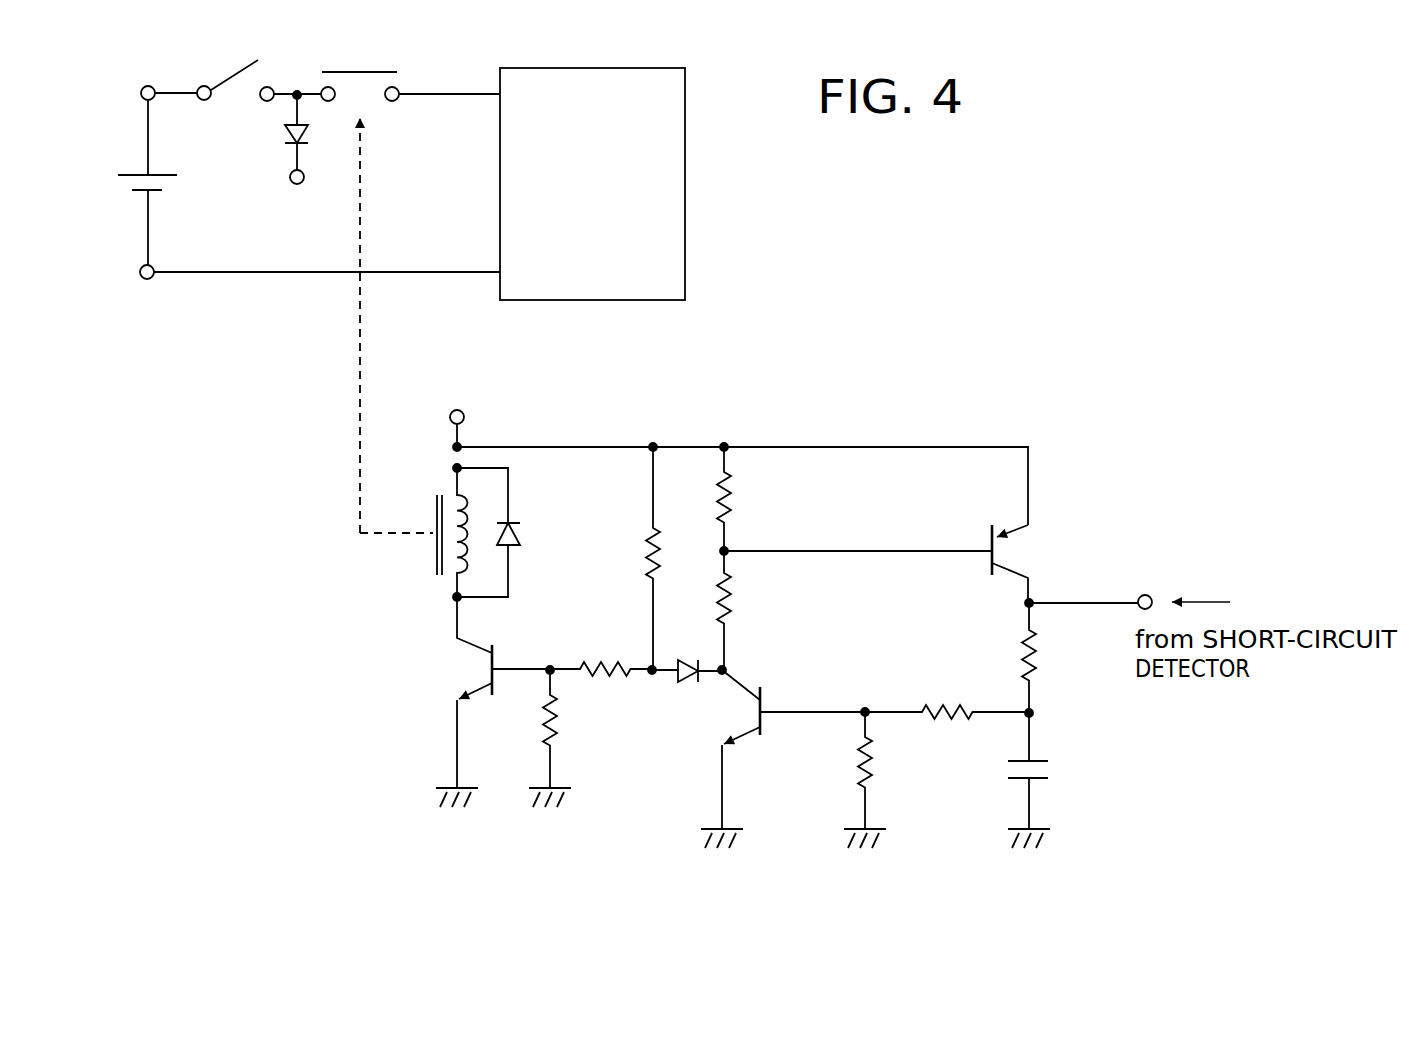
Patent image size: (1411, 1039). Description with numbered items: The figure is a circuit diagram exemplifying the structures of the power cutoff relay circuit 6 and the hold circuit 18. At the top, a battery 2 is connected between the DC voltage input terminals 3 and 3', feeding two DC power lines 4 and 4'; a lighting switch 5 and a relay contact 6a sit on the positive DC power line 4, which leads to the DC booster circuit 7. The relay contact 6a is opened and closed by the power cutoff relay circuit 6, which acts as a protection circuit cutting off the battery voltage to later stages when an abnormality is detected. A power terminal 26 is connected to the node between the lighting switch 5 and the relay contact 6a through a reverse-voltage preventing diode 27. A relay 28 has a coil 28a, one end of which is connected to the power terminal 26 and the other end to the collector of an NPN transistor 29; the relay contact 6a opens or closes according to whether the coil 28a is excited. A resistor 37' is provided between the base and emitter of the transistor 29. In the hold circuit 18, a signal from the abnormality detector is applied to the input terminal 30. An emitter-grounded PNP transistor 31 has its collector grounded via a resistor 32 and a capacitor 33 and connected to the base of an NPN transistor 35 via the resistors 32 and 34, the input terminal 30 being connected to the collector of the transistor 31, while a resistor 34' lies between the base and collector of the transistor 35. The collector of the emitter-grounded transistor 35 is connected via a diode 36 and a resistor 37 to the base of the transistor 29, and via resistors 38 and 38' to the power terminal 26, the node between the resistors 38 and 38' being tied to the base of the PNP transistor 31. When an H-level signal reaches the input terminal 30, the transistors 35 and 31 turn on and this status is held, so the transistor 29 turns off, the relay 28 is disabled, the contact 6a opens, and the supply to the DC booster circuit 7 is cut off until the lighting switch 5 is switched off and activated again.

The battery 2 is at (158, 170).
The DC voltage input terminal 3 is at (148, 67).
The DC voltage input terminal 3' is at (136, 307).
The positive DC power line 4 is at (297, 61).
The DC power line 4' is at (327, 310).
The lighting switch 5 is at (222, 72).
The power cutoff relay circuit 6 is at (379, 694).
The relay contact 6a is at (368, 70).
The DC booster circuit 7 is at (606, 68).
The hold circuit 18 is at (925, 420).
The power terminal 26 is at (290, 182).
The reverse-voltage preventing diode 27 is at (284, 139).
The relay 28 is at (432, 543).
The coil 28a is at (452, 493).
The NPN transistor 29 is at (493, 652).
The input terminal 30 is at (1147, 594).
The PNP transistor 31 is at (990, 527).
The resistor 32 is at (1037, 658).
The capacitor 33 is at (1037, 762).
The resistor 34 is at (947, 679).
The resistor 34' is at (898, 780).
The NPN transistor 35 is at (763, 690).
The diode 36 is at (693, 677).
The resistor 37 is at (601, 636).
The resistor 37' is at (581, 738).
The resistor 38 is at (759, 608).
The resistor 38' is at (762, 499).